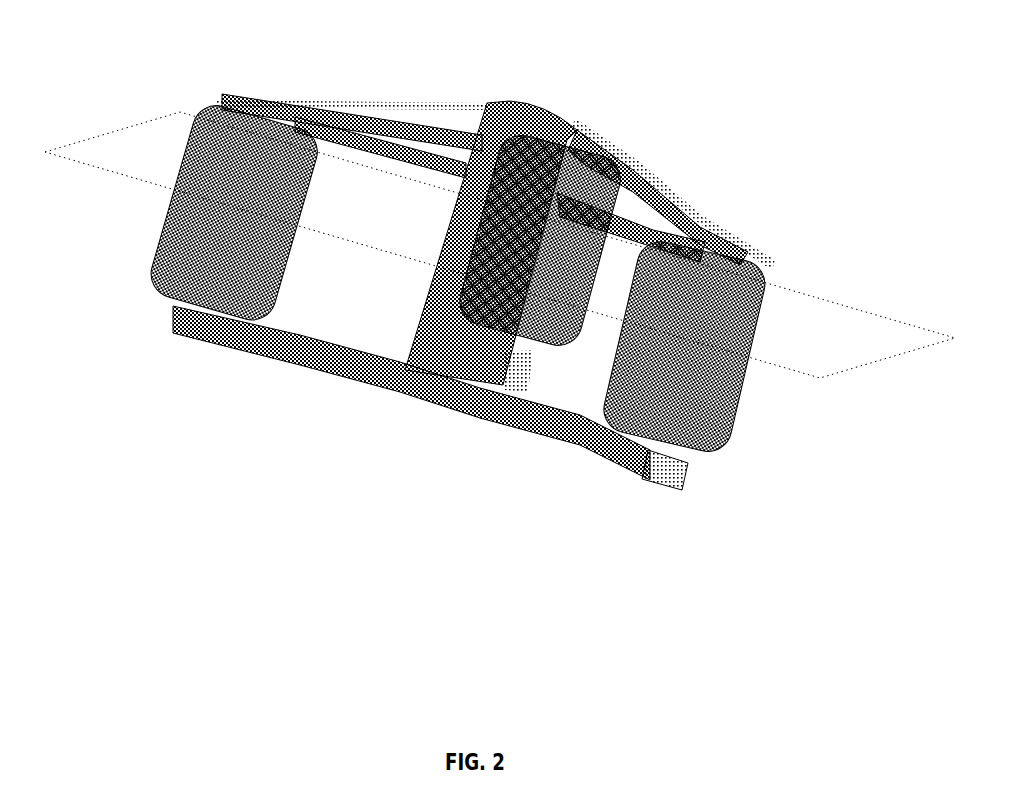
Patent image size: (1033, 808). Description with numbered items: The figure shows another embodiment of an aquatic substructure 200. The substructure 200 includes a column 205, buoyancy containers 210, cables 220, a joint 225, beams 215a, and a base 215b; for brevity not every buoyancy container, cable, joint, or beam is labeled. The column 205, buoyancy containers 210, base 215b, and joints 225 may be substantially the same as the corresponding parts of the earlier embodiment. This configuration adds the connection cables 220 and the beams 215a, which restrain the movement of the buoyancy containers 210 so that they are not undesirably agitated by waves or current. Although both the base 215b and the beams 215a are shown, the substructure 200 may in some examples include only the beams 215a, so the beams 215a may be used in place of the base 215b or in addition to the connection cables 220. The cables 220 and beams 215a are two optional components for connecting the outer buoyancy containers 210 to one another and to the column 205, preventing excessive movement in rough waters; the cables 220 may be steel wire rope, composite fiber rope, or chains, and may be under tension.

The aquatic substructure 200 is at (425, 293).
The column 205 is at (540, 108).
The buoyancy containers 210 is at (192, 102).
The beams 215a is at (420, 147).
The base 215b is at (330, 373).
The cables 220 is at (637, 177).
The joint 225 is at (680, 463).